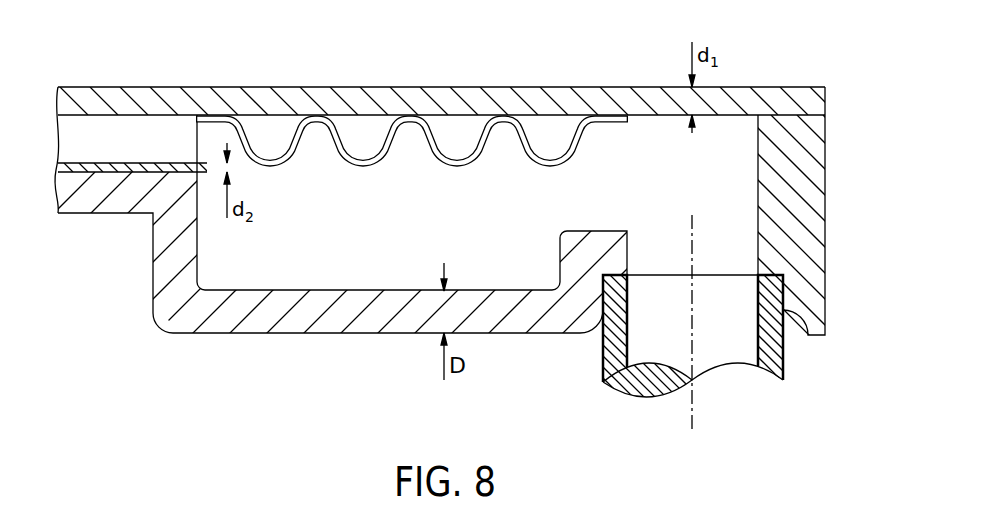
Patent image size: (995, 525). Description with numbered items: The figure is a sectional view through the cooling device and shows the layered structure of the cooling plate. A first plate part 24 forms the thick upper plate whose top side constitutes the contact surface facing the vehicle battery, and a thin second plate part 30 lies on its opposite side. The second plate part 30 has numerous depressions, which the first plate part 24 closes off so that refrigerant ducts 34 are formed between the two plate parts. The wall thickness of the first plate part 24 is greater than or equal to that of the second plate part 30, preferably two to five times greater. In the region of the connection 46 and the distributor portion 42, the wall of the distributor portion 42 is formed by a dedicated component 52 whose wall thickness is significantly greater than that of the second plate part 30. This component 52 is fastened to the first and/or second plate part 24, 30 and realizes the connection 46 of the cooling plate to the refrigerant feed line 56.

The first plate part 24 is at (257, 97).
The refrigerant ducts 34 is at (102, 130).
The second plate part 30 is at (148, 162).
The distributor portion 42 is at (253, 267).
The component 52 is at (323, 313).
The connection 46 is at (615, 345).
The refrigerant feed line 56 is at (767, 345).